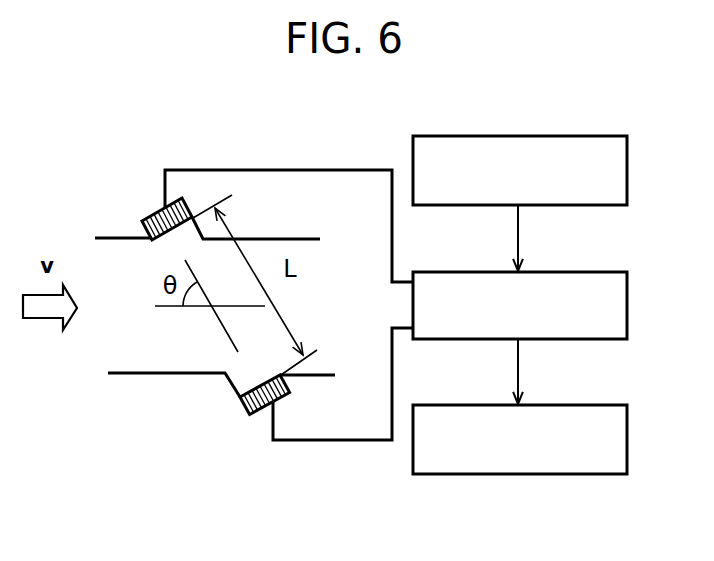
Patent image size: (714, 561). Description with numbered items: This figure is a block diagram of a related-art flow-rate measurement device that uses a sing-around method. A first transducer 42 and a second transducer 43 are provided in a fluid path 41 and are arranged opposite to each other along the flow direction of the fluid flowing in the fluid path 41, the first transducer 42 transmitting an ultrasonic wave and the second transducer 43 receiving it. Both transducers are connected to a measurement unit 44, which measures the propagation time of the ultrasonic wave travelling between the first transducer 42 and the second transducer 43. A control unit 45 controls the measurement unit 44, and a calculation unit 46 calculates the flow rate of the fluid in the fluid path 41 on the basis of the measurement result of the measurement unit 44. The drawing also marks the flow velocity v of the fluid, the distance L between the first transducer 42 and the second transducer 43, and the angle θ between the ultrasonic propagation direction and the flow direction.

The fluid path 41 is at (138, 375).
The first transducer 42 is at (150, 212).
The second transducer 43 is at (237, 405).
The measurement unit 44 is at (477, 339).
The control unit 45 is at (477, 205).
The calculation unit 46 is at (477, 474).